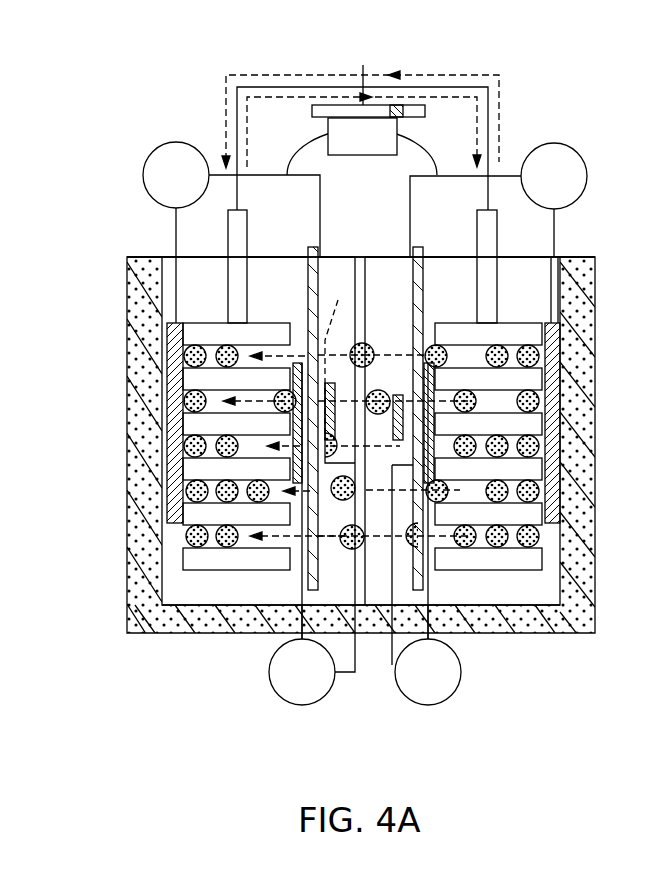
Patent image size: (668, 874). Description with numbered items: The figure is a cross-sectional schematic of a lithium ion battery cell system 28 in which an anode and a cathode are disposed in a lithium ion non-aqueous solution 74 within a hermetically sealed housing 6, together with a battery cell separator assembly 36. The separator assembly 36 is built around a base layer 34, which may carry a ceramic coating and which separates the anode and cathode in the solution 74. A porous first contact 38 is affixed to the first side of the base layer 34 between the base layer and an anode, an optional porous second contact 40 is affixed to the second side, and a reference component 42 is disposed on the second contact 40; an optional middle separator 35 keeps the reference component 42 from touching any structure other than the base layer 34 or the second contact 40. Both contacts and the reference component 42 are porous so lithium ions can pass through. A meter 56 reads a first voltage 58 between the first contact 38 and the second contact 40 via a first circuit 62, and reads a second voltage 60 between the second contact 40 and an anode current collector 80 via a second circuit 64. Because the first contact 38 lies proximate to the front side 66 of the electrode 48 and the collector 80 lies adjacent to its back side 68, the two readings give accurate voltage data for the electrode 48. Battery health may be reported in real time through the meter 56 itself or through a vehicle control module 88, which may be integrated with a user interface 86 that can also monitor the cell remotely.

The hermetically sealed housing 6 is at (595, 413).
The lithium ion battery cell system 28 is at (110, 271).
The base layer 34 is at (307, 318).
The middle separator 35 is at (363, 464).
The battery cell separator assembly 36 is at (290, 244).
The first contact 38 is at (416, 362).
The second contact 40 is at (407, 503).
The reference component 42 is at (365, 405).
The electrode 48 is at (192, 558).
The meter 56 is at (345, 157).
The first voltage 58 is at (288, 703).
The second voltage 60 is at (143, 180).
The first circuit 62 is at (337, 673).
The second circuit 64 is at (212, 173).
The front side 66 is at (192, 473).
The back side 68 is at (192, 423).
The lithium ion non-aqueous solution 74 is at (238, 597).
The anode current collector 80 is at (175, 388).
The user interface 86 is at (425, 108).
The vehicle control module 88 is at (395, 113).